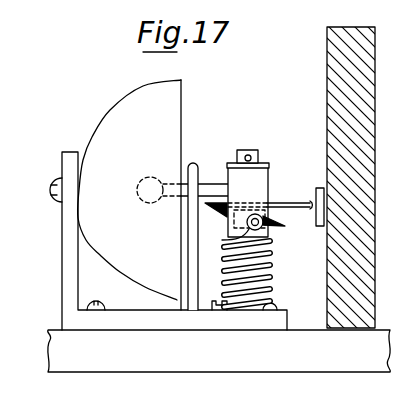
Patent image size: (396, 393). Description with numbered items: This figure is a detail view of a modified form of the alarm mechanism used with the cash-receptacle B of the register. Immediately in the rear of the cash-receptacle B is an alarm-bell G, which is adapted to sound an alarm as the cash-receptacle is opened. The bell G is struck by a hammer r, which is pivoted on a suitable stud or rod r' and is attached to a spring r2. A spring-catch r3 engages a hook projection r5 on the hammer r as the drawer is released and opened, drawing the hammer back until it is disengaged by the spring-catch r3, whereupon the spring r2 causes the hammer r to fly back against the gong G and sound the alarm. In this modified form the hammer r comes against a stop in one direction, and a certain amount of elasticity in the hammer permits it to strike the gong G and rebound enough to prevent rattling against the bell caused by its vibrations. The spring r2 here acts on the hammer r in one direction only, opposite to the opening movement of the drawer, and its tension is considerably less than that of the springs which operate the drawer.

The alarm-bell G is at (129, 195).
The hammer r is at (199, 228).
The stud or rod r' is at (237, 182).
The spring r2 is at (270, 288).
The spring-catch r3 is at (291, 203).
The hook projection r5 is at (286, 226).
The cash-receptacle B is at (343, 98).